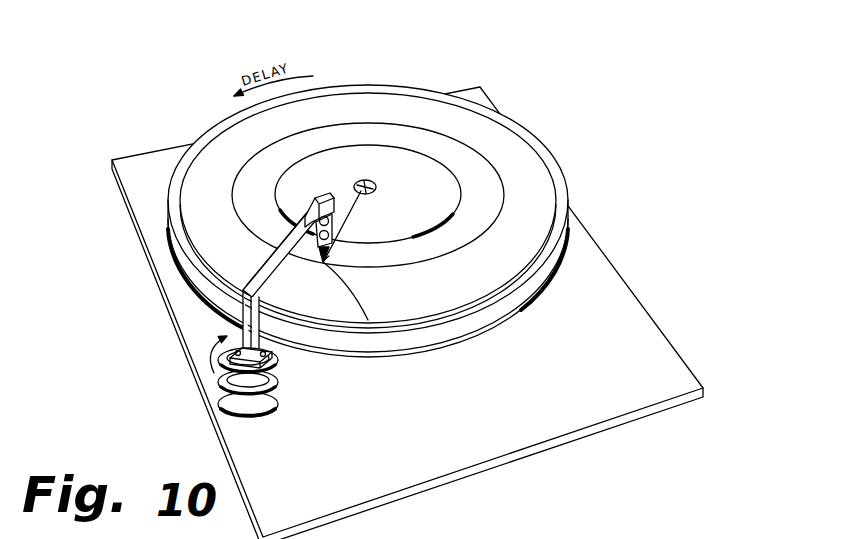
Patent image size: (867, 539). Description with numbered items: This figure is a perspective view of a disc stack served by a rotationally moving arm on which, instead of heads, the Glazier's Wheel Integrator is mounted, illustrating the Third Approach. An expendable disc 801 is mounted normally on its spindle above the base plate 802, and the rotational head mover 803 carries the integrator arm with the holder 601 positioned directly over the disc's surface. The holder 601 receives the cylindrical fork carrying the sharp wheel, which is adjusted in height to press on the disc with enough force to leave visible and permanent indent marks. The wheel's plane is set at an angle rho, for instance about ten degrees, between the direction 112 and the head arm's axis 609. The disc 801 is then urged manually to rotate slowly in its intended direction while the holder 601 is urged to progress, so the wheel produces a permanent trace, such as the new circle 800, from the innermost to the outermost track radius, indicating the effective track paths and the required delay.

The holder 601 is at (312, 205).
The head arm's axis 609 is at (320, 264).
The wheel plane direction 112 is at (324, 268).
The new circle 800 is at (367, 304).
The disc 801 is at (242, 264).
The base plate 802 is at (687, 362).
The rotational head mover 803 is at (282, 361).